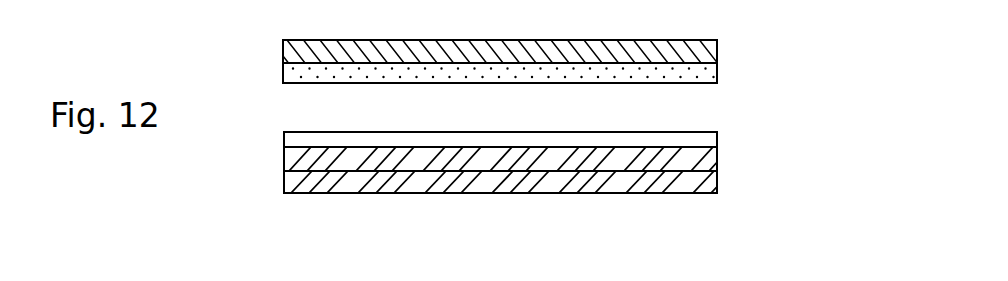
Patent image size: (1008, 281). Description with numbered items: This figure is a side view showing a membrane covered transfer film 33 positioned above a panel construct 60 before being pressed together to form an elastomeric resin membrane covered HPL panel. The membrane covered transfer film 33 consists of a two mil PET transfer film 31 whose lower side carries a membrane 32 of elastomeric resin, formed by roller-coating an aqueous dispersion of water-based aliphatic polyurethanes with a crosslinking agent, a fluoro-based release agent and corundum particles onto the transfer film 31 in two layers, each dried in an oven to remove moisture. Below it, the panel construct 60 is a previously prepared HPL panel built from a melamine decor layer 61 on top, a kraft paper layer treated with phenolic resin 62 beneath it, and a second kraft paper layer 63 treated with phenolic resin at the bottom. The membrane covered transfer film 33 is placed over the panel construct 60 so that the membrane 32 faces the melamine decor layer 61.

The membrane covered transfer film 33 is at (270, 45).
The PET transfer film 31 is at (717, 50).
The membrane 32 is at (717, 73).
The panel construct 60 is at (270, 137).
The melamine decor layer 61 is at (717, 142).
The kraft paper layer treated with phenolic resin 62 is at (717, 158).
The second kraft paper layer treated with phenolic resin 63 is at (717, 182).